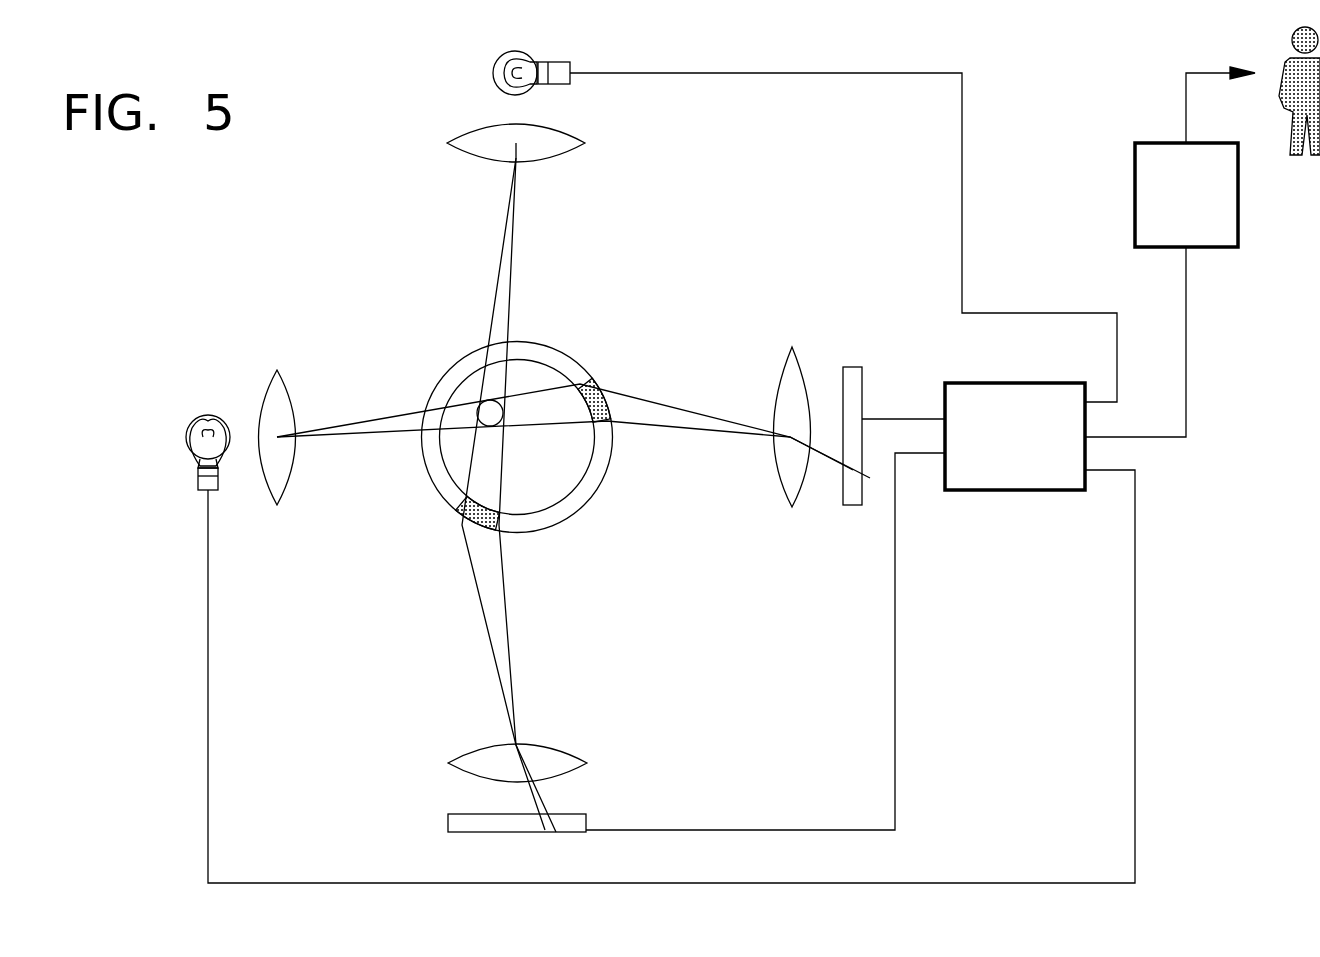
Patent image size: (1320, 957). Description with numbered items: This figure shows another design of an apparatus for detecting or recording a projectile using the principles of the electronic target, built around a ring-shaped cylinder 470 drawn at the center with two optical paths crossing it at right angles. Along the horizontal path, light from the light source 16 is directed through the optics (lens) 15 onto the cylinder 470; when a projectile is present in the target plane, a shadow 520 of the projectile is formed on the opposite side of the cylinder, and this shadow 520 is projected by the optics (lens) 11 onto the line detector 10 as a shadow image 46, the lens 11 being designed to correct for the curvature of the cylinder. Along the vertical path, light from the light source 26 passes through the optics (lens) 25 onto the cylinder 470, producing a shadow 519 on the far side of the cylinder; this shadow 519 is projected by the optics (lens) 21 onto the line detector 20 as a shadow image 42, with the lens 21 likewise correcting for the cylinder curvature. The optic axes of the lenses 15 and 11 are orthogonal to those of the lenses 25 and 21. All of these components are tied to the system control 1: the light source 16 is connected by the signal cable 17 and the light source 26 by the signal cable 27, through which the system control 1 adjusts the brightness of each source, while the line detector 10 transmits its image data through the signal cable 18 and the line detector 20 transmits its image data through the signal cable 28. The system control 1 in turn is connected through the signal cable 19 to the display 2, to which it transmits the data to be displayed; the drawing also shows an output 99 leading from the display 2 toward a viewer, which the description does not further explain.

The system control 1 is at (1015, 436).
The display 2 is at (1186, 195).
The line detector 10 is at (850, 367).
The optics (lens) 11 is at (789, 347).
The optics (lens) 15 is at (273, 370).
The light source 16 is at (210, 415).
The signal cable 17 is at (208, 577).
The signal cable 18 is at (900, 414).
The signal cable 19 is at (1145, 437).
The line detector 20 is at (448, 822).
The optics (lens) 21 is at (448, 763).
The optics (lens) 25 is at (447, 143).
The light source 26 is at (493, 73).
The signal cable 27 is at (690, 75).
The signal cable 28 is at (720, 828).
The shadow image 42 is at (545, 830).
The shadow image 46 is at (870, 478).
The output to user 99 is at (1180, 105).
The rotating filter wheel 470 is at (548, 343).
The shadow 519 is at (485, 523).
The shadow 520 is at (610, 403).